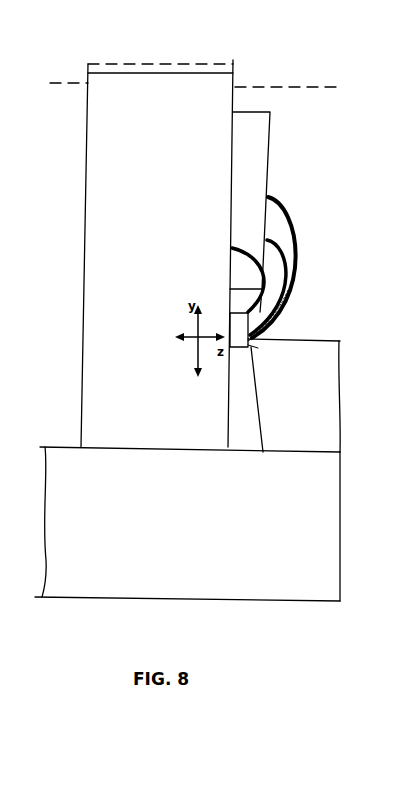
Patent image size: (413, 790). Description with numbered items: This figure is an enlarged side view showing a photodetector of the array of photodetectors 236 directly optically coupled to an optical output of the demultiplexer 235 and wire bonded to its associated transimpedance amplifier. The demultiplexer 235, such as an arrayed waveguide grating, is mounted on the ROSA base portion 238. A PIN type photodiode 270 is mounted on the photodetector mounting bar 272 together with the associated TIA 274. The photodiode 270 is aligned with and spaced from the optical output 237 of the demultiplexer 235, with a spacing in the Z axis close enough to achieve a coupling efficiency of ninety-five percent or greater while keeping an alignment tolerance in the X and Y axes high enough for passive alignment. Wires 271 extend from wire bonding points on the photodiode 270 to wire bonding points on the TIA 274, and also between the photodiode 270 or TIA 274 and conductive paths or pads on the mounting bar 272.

The photodetector mounting bar 272 is at (233, 99).
The transimpedance amplifier 274 is at (262, 143).
The wires 271 is at (288, 215).
The array of photodetectors 236 is at (314, 274).
The demultiplexer 235 is at (326, 340).
The optical outputs 237 is at (252, 342).
The PIN type photodiode 270 is at (237, 349).
The ROSA base portion 238 is at (268, 588).